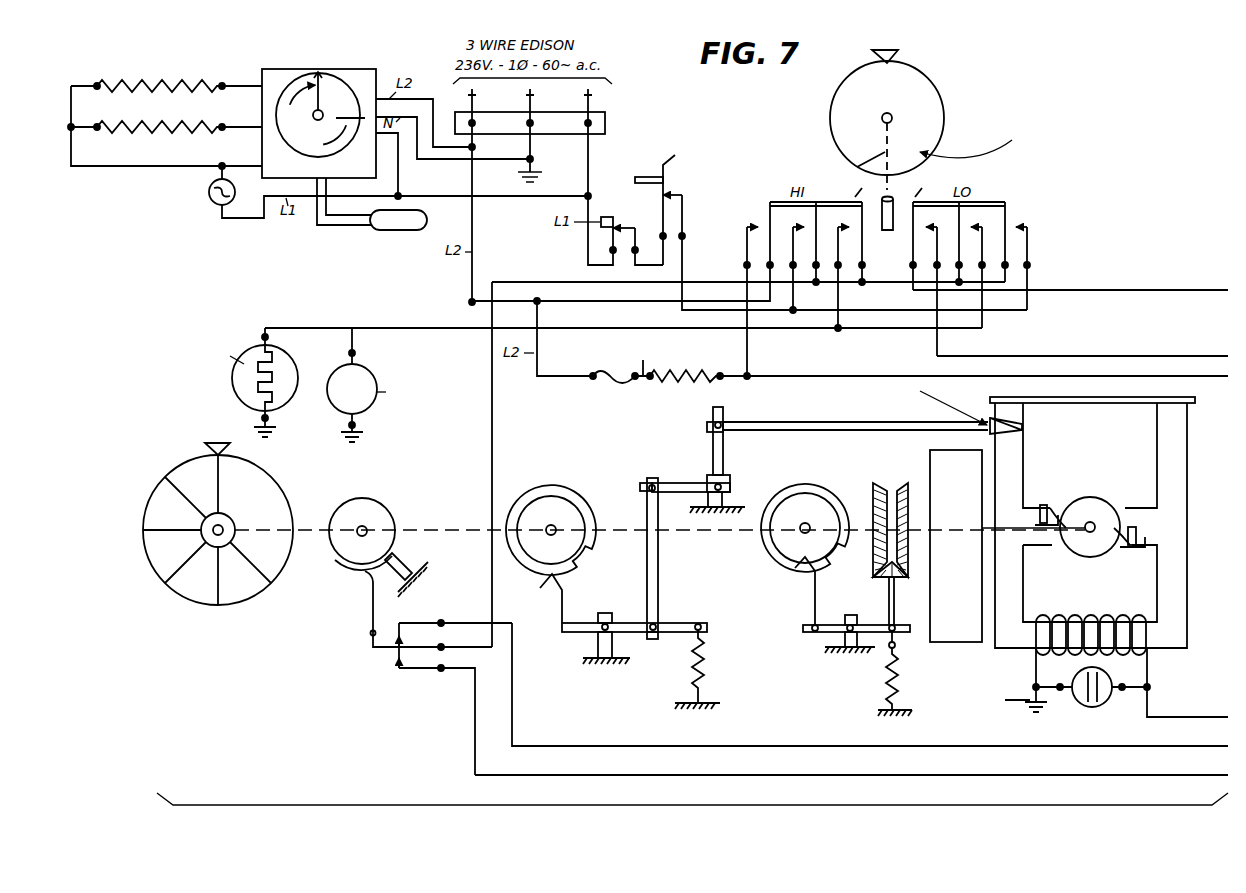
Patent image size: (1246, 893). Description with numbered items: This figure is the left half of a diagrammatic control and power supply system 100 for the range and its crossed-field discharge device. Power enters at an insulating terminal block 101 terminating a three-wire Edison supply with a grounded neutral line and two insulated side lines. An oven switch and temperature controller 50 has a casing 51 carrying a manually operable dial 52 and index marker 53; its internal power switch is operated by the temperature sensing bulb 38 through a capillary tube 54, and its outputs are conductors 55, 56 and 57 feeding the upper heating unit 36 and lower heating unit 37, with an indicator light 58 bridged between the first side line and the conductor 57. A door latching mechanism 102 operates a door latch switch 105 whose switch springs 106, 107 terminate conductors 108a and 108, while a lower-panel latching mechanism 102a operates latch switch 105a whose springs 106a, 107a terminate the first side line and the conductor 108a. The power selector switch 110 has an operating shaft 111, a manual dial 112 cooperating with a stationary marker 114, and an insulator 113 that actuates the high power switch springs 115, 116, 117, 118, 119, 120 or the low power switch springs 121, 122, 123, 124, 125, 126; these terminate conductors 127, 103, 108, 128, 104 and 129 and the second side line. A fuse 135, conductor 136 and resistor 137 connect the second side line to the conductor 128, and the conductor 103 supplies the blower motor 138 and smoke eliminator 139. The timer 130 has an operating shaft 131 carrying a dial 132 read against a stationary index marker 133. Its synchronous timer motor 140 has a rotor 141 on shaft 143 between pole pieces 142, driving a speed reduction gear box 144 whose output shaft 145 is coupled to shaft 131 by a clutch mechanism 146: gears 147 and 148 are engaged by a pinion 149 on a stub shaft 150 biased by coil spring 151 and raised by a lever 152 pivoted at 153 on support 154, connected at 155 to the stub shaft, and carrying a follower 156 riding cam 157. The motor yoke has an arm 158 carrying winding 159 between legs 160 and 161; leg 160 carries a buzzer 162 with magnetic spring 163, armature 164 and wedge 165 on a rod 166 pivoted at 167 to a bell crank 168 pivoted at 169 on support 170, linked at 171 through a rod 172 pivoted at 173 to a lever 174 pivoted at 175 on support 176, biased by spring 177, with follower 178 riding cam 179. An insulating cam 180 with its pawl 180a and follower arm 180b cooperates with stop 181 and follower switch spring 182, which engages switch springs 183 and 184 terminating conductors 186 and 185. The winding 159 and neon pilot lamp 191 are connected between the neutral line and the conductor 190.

The upper heating unit 36 is at (128, 85).
The lower heating unit 37 is at (122, 127).
The temperature sensing bulb 38 is at (393, 232).
The oven switch and temperature controller 50 is at (360, 66).
The casing 51 is at (280, 71).
The manually operable dial 52 is at (277, 133).
The index marker 53 is at (321, 71).
The capillary tube 54 is at (342, 229).
The conductor 55 is at (242, 85).
The conductor 56 is at (248, 126).
The conductor 57 is at (162, 168).
The indicator light 58 is at (208, 197).
The control circuit 100 is at (746, 107).
The insulating terminal block 101 is at (605, 125).
The latching mechanism 102 is at (637, 178).
The latching mechanism 102a is at (613, 192).
The conductor 103 is at (418, 328).
The conductor 104 is at (1182, 291).
The door latch switch 105 is at (672, 182).
The door latch switch 105a is at (614, 222).
The switch spring 106 is at (684, 201).
The switch spring 106a is at (611, 251).
The switch spring 107 is at (684, 223).
The switch spring 107a is at (632, 240).
The conductor 108 is at (684, 276).
The conductor 108a is at (646, 265).
The power selector switch 110 is at (982, 121).
The rotatable operating shaft 111 is at (856, 167).
The manual dial 112 is at (840, 106).
The insulator 113 is at (882, 204).
The stationary marker 114 is at (897, 56).
The high power switch spring 115 is at (868, 243).
The high power switch spring 116 is at (844, 279).
The high power switch spring 117 is at (822, 243).
The high power switch spring 118 is at (799, 268).
The high power switch spring 119 is at (629, 253).
The high power switch spring 120 is at (753, 303).
The low power switch spring 121 is at (919, 246).
The low power switch spring 122 is at (939, 291).
The low power switch spring 123 is at (965, 243).
The low power switch spring 124 is at (984, 277).
The low power switch spring 125 is at (1011, 242).
The low power switch spring 126 is at (1029, 268).
The conductor 127 is at (900, 290).
The conductor 128 is at (762, 376).
The conductor 129 is at (1182, 358).
The timer 130 is at (692, 813).
The operating shaft 131 is at (305, 533).
The manually operable dial 132 is at (262, 497).
The stationary index marker 133 is at (210, 450).
The fuse 135 is at (604, 372).
The conductor 136 is at (643, 360).
The resistor 137 is at (680, 372).
The blower motor 138 is at (330, 372).
The smoke eliminator 139 is at (232, 383).
The timer motor 140 is at (1082, 479).
The rotor 141 is at (1089, 497).
The pole pieces 142 is at (1150, 542).
The operating shaft 143 is at (1022, 525).
The speed reduction gear box 144 is at (1045, 643).
The output shaft 145 is at (920, 480).
The clutch mechanism 146 is at (891, 470).
The gear 147 is at (876, 486).
The gear 148 is at (897, 500).
The pinion 149 is at (880, 576).
The stub shaft 150 is at (894, 560).
The coil spring 151 is at (900, 687).
The lever 152 is at (810, 624).
The pivot 153 is at (856, 621).
The stationary support 154 is at (845, 640).
The pivotal connection 155 is at (896, 645).
The follower 156 is at (810, 590).
The cam 157 is at (792, 498).
The arm 158 is at (1072, 620).
The winding 159 is at (1127, 620).
The leg 160 is at (1182, 512).
The leg 161 is at (1017, 485).
The buzzer 162 is at (1020, 396).
The metal spring 163 is at (1111, 400).
The armature 164 is at (1017, 412).
The wedge 165 is at (990, 428).
The rod 166 is at (802, 423).
The pivotal connection 167 is at (718, 414).
The bell crank 168 is at (682, 483).
The pivot 169 is at (717, 483).
The external support 170 is at (724, 498).
The pivotal connection 171 is at (651, 484).
The rod 172 is at (658, 563).
The pivotal connection 173 is at (656, 624).
The lever 174 is at (582, 623).
The pivot 175 is at (608, 624).
The external support 176 is at (598, 645).
The coil spring 177 is at (708, 667).
The follower 178 is at (566, 596).
The cam 179 is at (555, 496).
The insulating cam 180 is at (373, 511).
The cam pawl 180a is at (403, 562).
The cam follower arm 180b is at (338, 564).
The external stop 181 is at (395, 592).
The follower switch spring 182 is at (441, 647).
The switch spring 183 is at (441, 623).
The switch spring 184 is at (441, 668).
The conductor 185 is at (541, 778).
The conductor 186 is at (543, 750).
The conductor 190 is at (1205, 717).
The pilot lamp 191 is at (1080, 703).